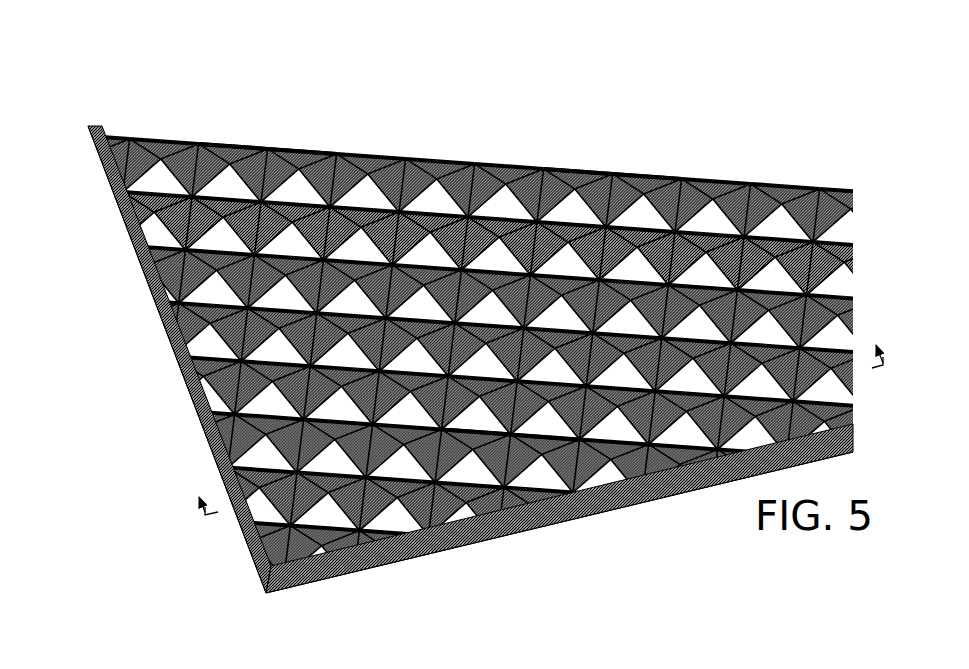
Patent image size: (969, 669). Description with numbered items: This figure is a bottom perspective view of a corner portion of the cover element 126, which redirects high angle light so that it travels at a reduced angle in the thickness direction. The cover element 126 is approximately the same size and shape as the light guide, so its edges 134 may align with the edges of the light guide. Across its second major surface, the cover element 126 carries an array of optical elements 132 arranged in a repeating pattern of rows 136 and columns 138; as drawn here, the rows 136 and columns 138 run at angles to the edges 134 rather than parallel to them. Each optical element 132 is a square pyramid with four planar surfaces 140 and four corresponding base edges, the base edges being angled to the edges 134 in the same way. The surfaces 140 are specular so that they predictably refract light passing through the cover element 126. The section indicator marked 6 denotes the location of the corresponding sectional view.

The cover element 126 is at (262, 555).
The optical elements 132 is at (265, 150).
The edges 134 is at (132, 244).
The rows 136 is at (121, 276).
The columns 138 is at (391, 591).
The surfaces 140 is at (442, 198).
The section line 6- 6 is at (534, 414).